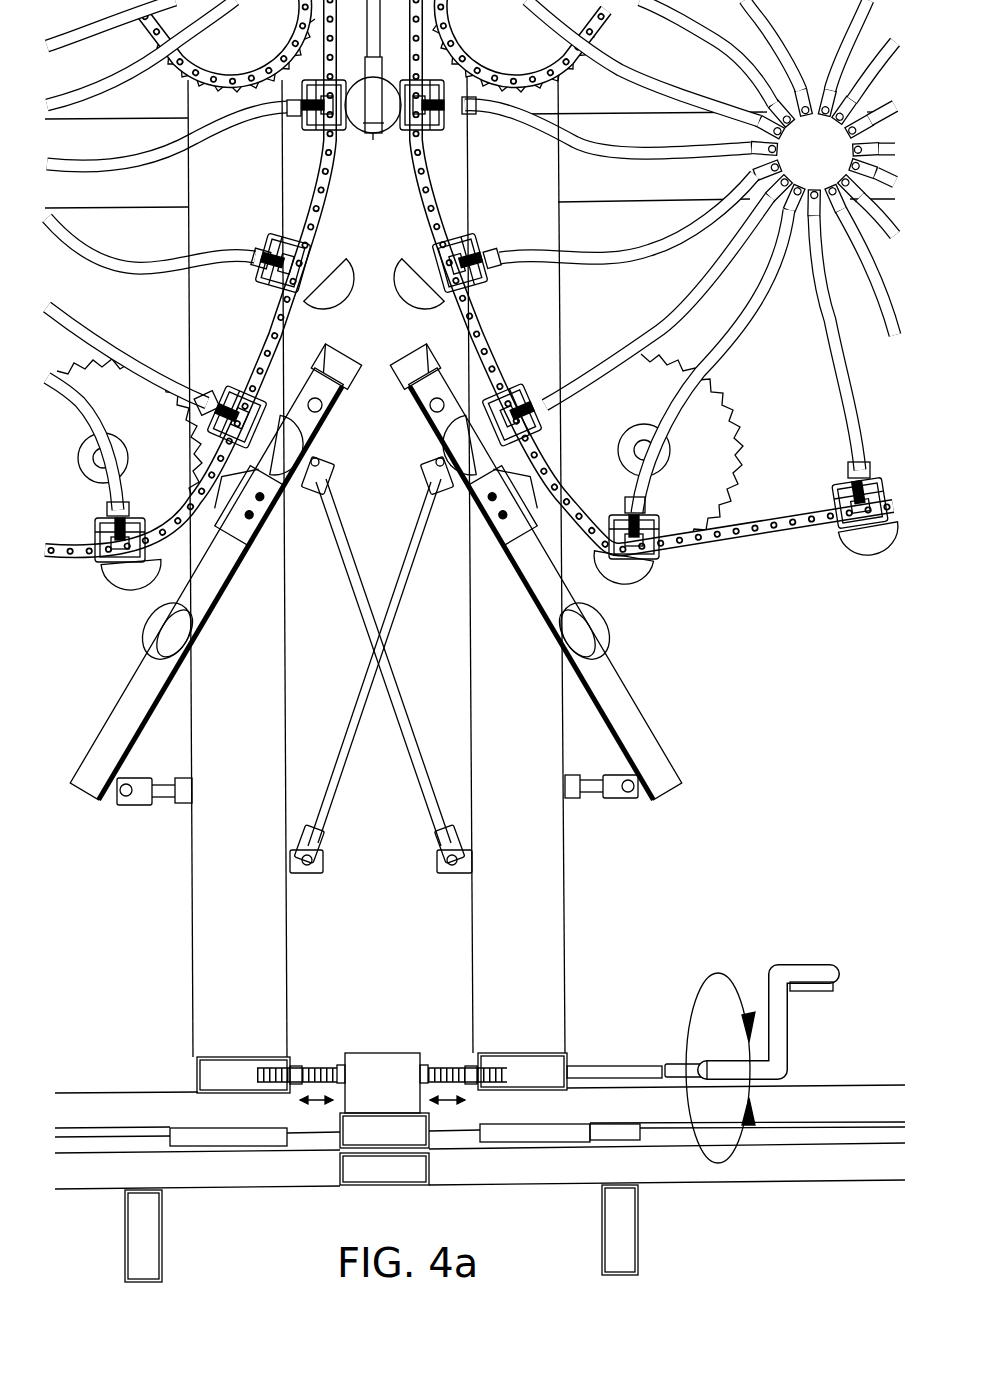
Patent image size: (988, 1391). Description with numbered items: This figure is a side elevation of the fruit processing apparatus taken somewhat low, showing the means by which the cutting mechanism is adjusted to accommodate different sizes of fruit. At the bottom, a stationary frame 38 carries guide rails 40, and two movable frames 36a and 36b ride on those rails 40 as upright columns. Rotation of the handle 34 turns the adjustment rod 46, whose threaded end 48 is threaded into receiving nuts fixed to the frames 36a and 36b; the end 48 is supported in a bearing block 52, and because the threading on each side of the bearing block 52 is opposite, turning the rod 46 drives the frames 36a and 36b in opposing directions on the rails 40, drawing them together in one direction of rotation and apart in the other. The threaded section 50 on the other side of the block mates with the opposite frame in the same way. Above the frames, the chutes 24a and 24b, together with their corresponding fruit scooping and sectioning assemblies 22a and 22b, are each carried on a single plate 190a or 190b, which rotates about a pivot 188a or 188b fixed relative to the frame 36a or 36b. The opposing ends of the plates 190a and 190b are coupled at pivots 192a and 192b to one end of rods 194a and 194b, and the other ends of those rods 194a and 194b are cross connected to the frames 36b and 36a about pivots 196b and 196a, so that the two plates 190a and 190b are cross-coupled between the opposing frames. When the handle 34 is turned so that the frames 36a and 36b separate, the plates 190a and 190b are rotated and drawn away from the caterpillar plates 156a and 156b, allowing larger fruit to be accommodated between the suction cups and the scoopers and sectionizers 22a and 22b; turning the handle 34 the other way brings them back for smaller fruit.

The fruit scooping and sectioning assembly 22a is at (435, 412).
The fruit scooping and sectioning assembly 22b is at (330, 403).
The chute 24a is at (682, 776).
The chute 24b is at (168, 697).
The handle 34 is at (790, 960).
The movable frame 36a is at (567, 877).
The movable frame 36b is at (192, 840).
The stationary frame 38 is at (758, 1167).
The rails 40 is at (863, 1135).
The rod 46 is at (583, 1060).
The end of rod 48 is at (293, 1057).
The threaded rod 50 is at (472, 1057).
The bearing block 52 is at (358, 1053).
The caterpillar plate 156a is at (458, 312).
The caterpillar plate 156b is at (288, 312).
The pivot 188a is at (636, 800).
The pivot 188b is at (128, 805).
The plate 190a is at (522, 570).
The plate 190b is at (268, 575).
The pivot 192a is at (425, 459).
The pivot 192b is at (338, 465).
The rod 194a is at (348, 712).
The rod 194b is at (403, 693).
The pivot 196a is at (447, 873).
The pivot 196b is at (312, 873).